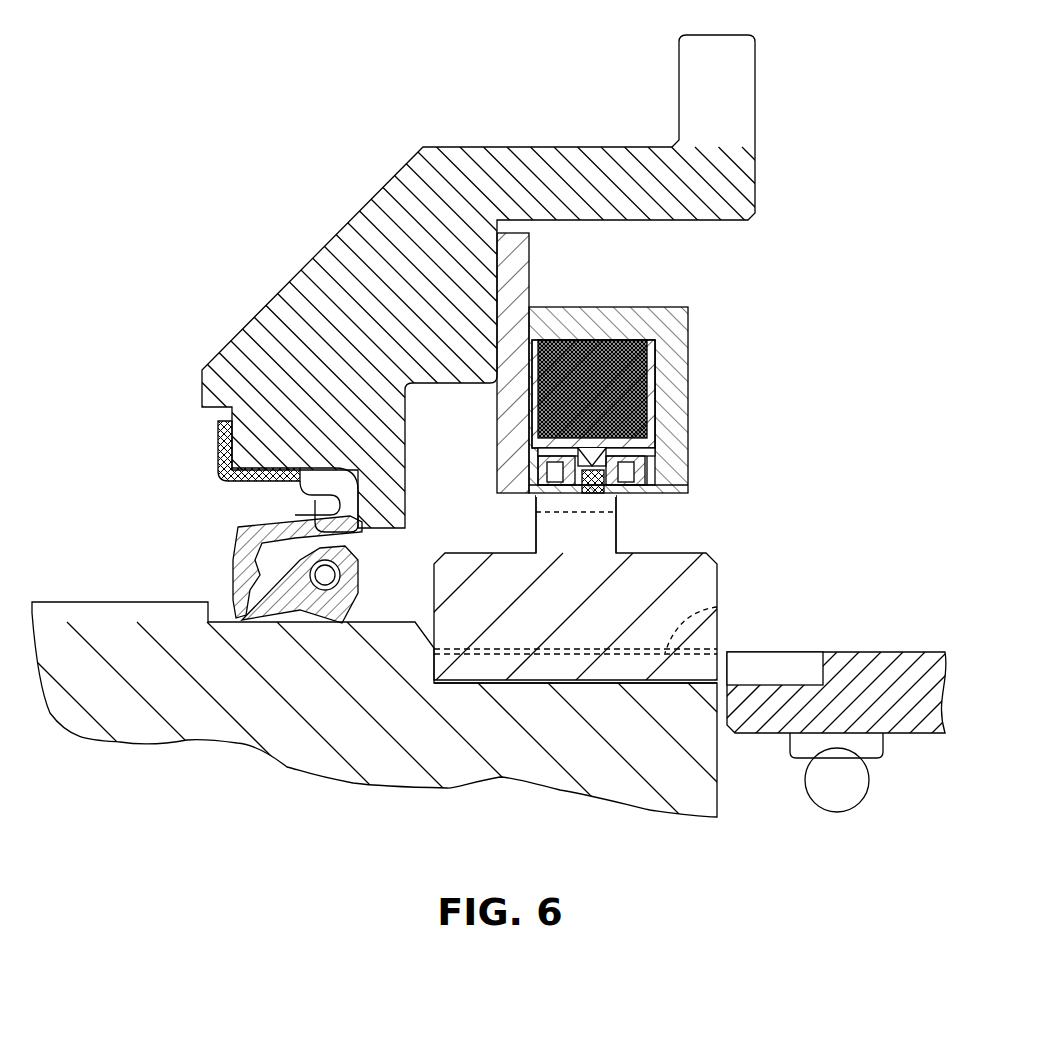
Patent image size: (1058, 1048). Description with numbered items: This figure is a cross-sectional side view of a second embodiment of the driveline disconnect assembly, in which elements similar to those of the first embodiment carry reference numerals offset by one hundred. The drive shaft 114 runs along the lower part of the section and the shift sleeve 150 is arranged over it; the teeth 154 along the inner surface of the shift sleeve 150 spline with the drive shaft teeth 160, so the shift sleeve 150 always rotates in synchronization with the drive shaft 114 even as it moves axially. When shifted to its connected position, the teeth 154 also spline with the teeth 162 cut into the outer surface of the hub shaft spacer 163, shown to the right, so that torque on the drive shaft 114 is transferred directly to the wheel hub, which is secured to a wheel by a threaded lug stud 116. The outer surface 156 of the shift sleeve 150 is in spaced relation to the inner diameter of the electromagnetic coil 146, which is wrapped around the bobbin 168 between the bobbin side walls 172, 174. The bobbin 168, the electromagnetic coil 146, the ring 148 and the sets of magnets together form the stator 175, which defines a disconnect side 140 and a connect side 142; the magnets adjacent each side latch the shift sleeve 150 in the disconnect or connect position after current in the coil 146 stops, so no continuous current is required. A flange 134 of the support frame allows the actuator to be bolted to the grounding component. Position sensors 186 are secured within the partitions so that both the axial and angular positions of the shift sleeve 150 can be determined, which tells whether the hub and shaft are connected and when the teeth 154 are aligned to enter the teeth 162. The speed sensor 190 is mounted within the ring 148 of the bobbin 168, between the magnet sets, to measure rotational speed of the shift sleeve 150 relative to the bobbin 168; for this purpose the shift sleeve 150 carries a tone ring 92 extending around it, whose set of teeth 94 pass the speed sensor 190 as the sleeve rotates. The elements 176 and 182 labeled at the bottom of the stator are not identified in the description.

The tone ring 92 is at (536, 525).
The set of teeth 94 is at (617, 502).
The drive shaft 114 is at (158, 602).
The threaded lug stud 116 is at (548, 147).
The flange 134 is at (529, 268).
The disconnect side 140 is at (497, 430).
The connect side 142 is at (688, 379).
The electromagnetic coil 146 is at (656, 346).
The ring 148 is at (533, 452).
The shift sleeve 150 is at (720, 565).
The plurality of teeth 154 is at (436, 682).
The outer surface 156 is at (450, 543).
The drive shaft teeth 160 is at (717, 608).
The plurality of teeth 162 is at (797, 652).
The hub shaft spacer 163 is at (897, 652).
The bobbin 168 is at (658, 405).
The bobbin side wall 172 is at (534, 352).
The bobbin side wall 174 is at (672, 352).
The stator 175 is at (651, 366).
The bottom plate 176 is at (500, 490).
The retainer 182 is at (652, 478).
The position sensor 186 is at (537, 462).
The speed sensor 190 is at (632, 456).